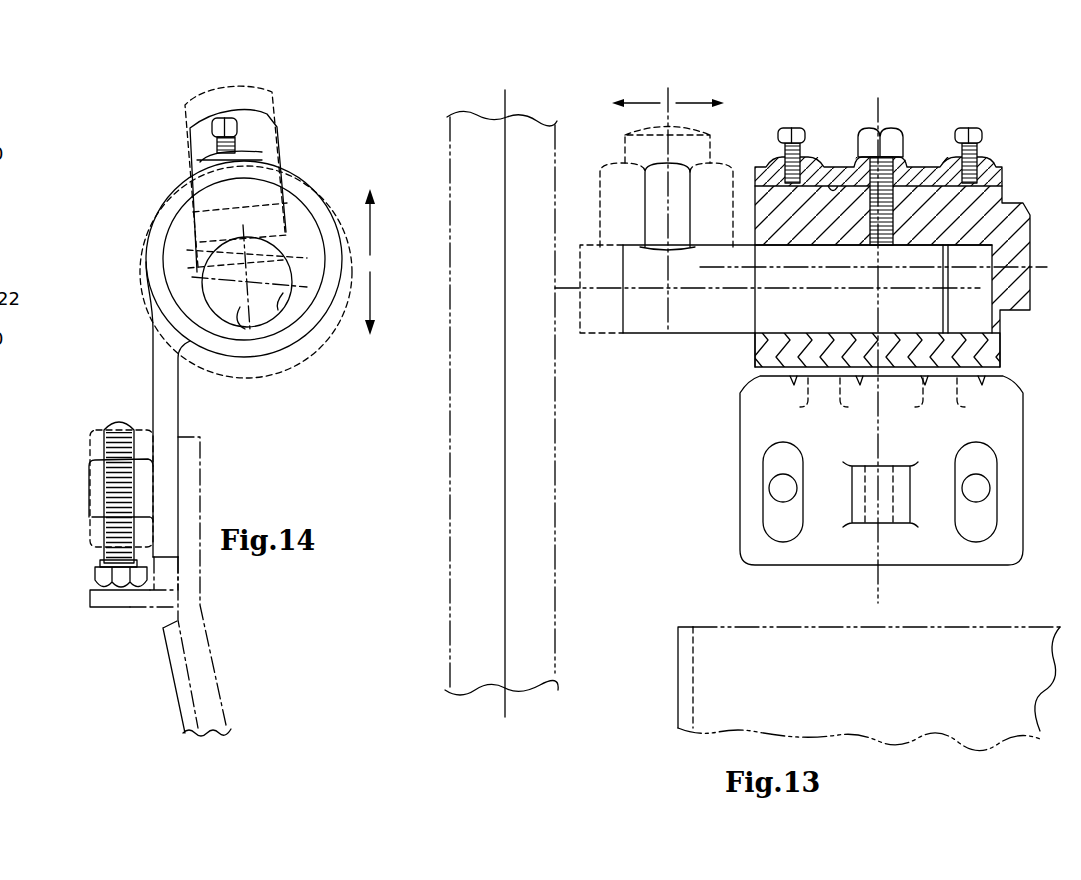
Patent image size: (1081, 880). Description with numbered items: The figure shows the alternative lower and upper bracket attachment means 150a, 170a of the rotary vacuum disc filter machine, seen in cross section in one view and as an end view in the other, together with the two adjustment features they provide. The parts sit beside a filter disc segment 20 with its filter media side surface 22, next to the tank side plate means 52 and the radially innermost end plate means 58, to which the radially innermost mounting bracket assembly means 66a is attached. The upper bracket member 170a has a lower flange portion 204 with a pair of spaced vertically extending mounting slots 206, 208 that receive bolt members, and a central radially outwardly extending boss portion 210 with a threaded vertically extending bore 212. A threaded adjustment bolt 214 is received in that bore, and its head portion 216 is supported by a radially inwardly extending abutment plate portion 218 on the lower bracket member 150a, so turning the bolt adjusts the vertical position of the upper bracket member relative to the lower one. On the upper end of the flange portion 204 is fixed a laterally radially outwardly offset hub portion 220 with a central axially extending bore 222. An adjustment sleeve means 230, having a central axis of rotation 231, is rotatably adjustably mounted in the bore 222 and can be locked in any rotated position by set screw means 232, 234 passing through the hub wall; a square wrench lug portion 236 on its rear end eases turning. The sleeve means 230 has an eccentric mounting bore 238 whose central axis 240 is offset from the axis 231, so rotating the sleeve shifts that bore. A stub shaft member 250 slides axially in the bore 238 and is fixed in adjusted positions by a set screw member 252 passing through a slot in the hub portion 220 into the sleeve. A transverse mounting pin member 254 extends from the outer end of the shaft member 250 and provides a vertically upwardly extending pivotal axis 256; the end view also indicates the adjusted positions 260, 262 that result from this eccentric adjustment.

In FIG. 13, the filter disc segment 20 is at (557, 485).
In FIG. 13, the filter media side surface 22 is at (555, 673).
In FIG. 13, the side plate means 52 is at (678, 687).
In FIG. 14, the radially innermost end plate means 58 is at (183, 712).
In FIG. 13, the radially innermost end plate means 58 is at (943, 740).
In FIG. 14, the radially innermost mounting bracket assembly means 66a is at (146, 392).
In FIG. 13, the radially innermost mounting bracket assembly means 66a is at (1009, 190).
In FIG. 14, the lower bracket member 150a is at (200, 618).
In FIG. 14, the upper bracket member 170a is at (186, 377).
In FIG. 13, the upper bracket member 170a is at (1012, 383).
In FIG. 14, the lower flange portion 204 is at (166, 493).
In FIG. 13, the lower flange portion 204 is at (755, 440).
In FIG. 13, the mounting slot 206 is at (779, 517).
In FIG. 13, the mounting slot 208 is at (972, 527).
In FIG. 14, the boss portion 210 is at (100, 482).
In FIG. 13, the boss portion 210 is at (860, 527).
In FIG. 14, the threaded vertically extending bore 212 is at (110, 500).
In FIG. 13, the threaded vertically extending bore 212 is at (893, 511).
In FIG. 14, the threaded adjustment bolt 214 is at (110, 558).
In FIG. 14, the head portion 216 is at (98, 575).
In FIG. 14, the abutment plate portion 218 is at (135, 603).
In FIG. 14, the hub portion 220 is at (302, 197).
In FIG. 13, the hub portion 220 is at (925, 180).
In FIG. 14, the central axially extending bore 222 is at (318, 294).
In FIG. 13, the central axially extending bore 222 is at (842, 182).
In FIG. 14, the adjustment sleeve means 230 is at (297, 237).
In FIG. 13, the adjustment sleeve means 230 is at (986, 218).
In FIG. 14, the central axis of rotation 231 is at (310, 196).
In FIG. 13, the central axis of rotation 231 is at (1036, 268).
In FIG. 13, the set screw means 232 is at (790, 128).
In FIG. 13, the set screw means 234 is at (967, 128).
In FIG. 13, the square wrench lug portion 236 is at (1006, 323).
In FIG. 14, the eccentric mounting bore 238 is at (283, 311).
In FIG. 13, the eccentric mounting bore 238 is at (790, 334).
In FIG. 14, the central axis 240 is at (192, 280).
In FIG. 13, the central axis 240 is at (686, 290).
In FIG. 14, the stub shaft member 250 is at (246, 335).
In FIG. 13, the stub shaft member 250 is at (638, 317).
In FIG. 13, the set screw member 252 is at (867, 128).
In FIG. 13, the transverse mounting pin member 254 is at (660, 183).
In FIG. 13, the pivotal axis 256 is at (668, 92).
In FIG. 13, the adjustment range 260 is at (628, 135).
In FIG. 13, the phantom position 262 is at (710, 136).